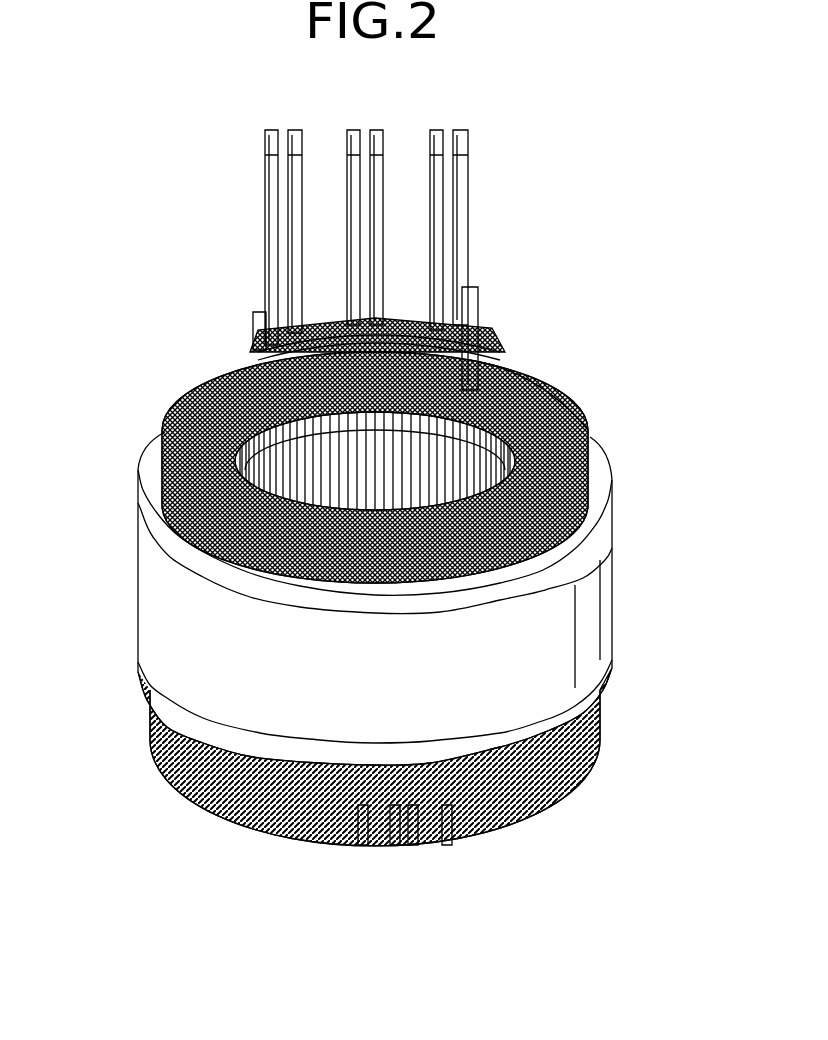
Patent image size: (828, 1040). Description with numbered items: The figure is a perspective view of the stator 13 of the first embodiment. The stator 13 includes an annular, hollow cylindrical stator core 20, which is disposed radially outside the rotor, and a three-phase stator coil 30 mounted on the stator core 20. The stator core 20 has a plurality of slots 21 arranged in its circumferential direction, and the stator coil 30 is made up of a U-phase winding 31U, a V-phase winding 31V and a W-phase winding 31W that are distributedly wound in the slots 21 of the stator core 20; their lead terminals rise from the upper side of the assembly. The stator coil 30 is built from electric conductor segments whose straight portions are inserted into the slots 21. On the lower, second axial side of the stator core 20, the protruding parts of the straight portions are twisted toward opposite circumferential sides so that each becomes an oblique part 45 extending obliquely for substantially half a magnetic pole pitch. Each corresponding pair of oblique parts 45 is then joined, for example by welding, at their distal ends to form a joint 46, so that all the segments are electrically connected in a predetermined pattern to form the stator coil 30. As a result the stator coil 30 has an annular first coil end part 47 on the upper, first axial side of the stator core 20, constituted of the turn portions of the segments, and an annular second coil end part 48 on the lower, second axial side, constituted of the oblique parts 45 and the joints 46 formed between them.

The stator 13 is at (540, 285).
The stator core 20 is at (138, 583).
The slots 21 is at (420, 587).
The stator coil 30 is at (197, 387).
The W-phase winding 31W is at (315, 131).
The V-phase winding 31V is at (397, 131).
The U-phase winding 31U is at (483, 131).
The oblique part 45 is at (447, 808).
The joint 46 is at (395, 808).
The first coil end part 47 is at (563, 392).
The second coil end part 48 is at (592, 725).